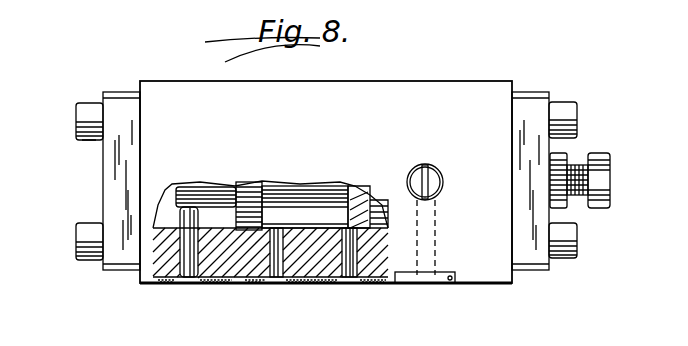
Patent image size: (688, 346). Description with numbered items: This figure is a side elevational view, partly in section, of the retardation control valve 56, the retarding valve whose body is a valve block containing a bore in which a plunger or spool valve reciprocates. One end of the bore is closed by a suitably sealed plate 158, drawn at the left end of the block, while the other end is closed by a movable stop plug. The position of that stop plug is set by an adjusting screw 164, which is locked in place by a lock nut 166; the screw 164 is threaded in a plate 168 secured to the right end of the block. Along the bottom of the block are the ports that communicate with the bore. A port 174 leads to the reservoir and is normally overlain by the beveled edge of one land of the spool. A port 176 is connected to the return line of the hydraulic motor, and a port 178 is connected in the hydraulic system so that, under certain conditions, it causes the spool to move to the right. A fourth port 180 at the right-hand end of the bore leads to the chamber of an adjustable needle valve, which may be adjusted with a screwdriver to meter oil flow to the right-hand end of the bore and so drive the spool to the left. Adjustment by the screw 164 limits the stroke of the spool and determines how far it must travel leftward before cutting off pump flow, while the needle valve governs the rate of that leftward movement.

The retardation control valve 56 is at (452, 70).
The sealed plate 158 is at (110, 164).
The adjusting screw 164 is at (585, 208).
The lock nut 166 is at (568, 210).
The plate 168 is at (536, 272).
The port 174 is at (370, 283).
The port 176 is at (290, 283).
The port 178 is at (188, 283).
The fourth port 180 is at (425, 285).